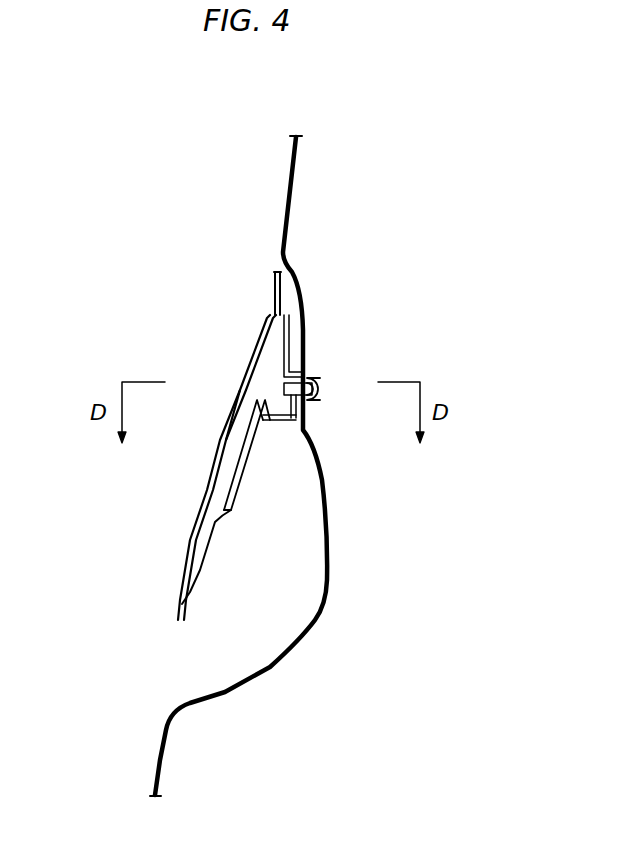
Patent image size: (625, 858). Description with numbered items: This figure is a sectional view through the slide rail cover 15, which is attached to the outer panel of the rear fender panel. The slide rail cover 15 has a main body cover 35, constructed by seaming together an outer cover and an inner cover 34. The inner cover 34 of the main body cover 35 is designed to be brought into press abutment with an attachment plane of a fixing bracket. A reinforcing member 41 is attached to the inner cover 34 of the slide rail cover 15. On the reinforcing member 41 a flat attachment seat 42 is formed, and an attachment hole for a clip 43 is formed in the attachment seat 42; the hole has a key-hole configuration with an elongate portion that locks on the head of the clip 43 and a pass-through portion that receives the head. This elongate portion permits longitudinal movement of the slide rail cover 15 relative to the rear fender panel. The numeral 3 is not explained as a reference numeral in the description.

The slide rail cover 15 is at (245, 367).
The main body cover 35 is at (229, 424).
The door 3 is at (177, 446).
The attachment seat 42 is at (307, 366).
The clip 43 is at (334, 378).
The reinforcing member 41 is at (247, 468).
The inner cover 34 is at (222, 516).